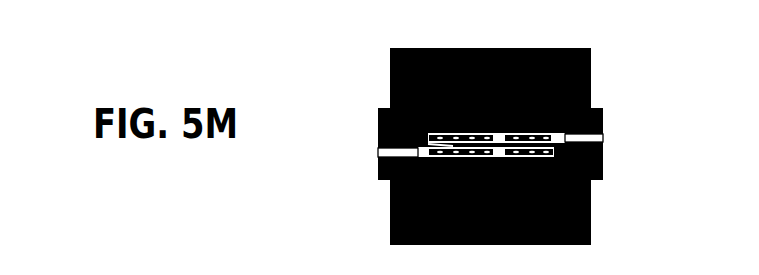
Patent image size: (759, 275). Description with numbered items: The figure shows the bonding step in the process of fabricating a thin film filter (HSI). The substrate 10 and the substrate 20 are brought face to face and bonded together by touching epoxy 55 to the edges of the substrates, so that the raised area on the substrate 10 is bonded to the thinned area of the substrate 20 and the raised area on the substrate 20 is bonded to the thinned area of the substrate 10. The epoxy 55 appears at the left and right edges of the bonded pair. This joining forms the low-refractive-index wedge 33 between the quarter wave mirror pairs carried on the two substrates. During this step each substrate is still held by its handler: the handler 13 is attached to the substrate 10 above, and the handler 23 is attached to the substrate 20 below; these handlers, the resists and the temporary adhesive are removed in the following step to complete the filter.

The handler 13 is at (583, 72).
The substrate 10 is at (595, 112).
The epoxy 55 is at (595, 130).
The substrate 20 is at (583, 153).
The handler 23 is at (583, 220).
The low-refractive-index wedge 33 is at (445, 138).